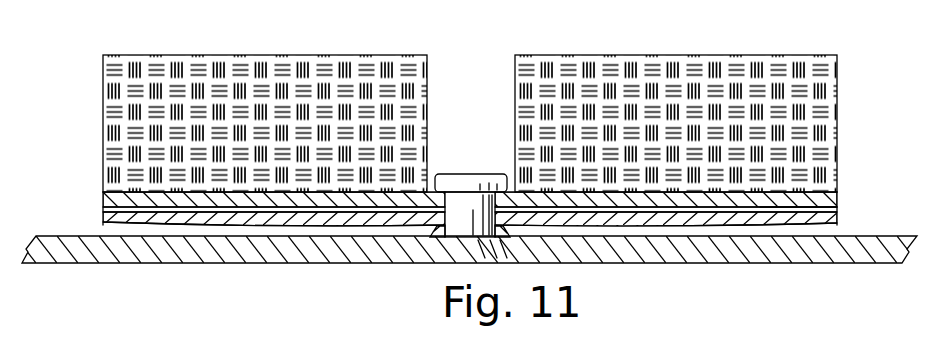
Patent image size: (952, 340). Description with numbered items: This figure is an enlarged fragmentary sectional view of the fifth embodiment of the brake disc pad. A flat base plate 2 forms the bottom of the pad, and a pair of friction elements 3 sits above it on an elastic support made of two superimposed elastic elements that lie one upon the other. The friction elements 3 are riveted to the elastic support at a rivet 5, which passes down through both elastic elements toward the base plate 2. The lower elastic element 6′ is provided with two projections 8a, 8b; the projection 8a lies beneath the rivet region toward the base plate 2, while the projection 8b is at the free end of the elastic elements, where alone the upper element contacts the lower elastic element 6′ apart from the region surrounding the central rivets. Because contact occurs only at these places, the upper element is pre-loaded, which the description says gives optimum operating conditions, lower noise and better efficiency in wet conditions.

The base plate 2 is at (679, 255).
The friction elements 3 is at (306, 56).
The rivet 5 is at (459, 174).
The lower elastic element 6′ is at (103, 218).
The projection 8a is at (430, 226).
The projection 8b is at (837, 208).